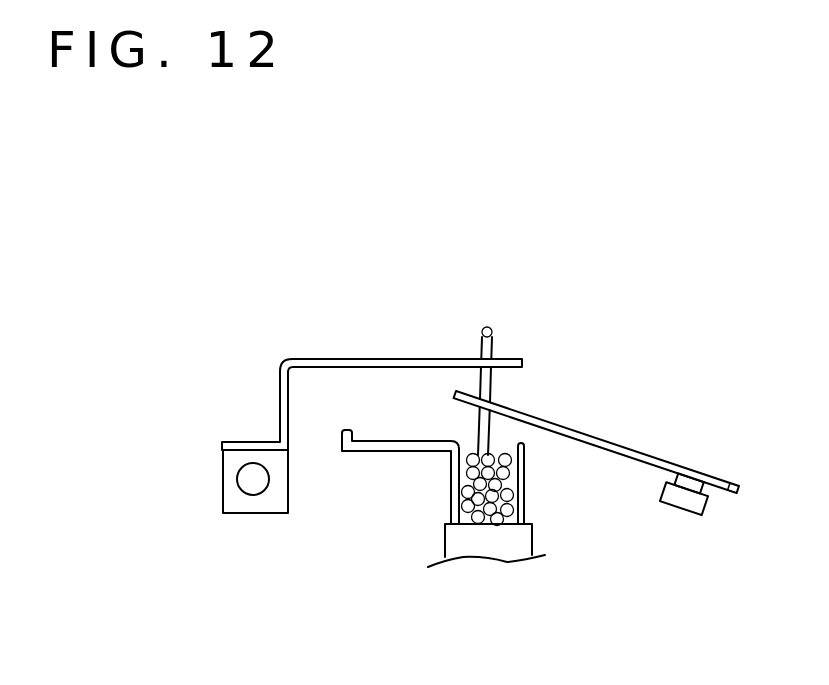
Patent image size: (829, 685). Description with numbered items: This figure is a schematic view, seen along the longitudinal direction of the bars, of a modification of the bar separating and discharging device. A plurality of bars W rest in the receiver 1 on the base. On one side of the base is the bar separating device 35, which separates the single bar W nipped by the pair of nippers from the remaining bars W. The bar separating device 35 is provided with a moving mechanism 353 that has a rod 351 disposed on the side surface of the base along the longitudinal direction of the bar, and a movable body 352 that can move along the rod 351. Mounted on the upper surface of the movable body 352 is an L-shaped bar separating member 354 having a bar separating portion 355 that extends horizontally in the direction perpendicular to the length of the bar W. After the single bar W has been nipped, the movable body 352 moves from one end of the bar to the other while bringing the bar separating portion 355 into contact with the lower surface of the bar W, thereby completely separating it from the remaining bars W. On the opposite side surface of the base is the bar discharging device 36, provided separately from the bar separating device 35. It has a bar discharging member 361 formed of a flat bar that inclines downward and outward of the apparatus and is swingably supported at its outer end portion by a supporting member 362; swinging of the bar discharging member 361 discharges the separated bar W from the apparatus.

The receiver 1 is at (440, 482).
The bar separating device 35 is at (337, 460).
The rod 351 is at (253, 487).
The movable body 352 is at (225, 499).
The moving mechanism 353 is at (237, 547).
The L-shaped bar separating member 354 is at (280, 403).
The bar separating portion 355 is at (386, 358).
The bar discharging device 36 is at (621, 459).
The bar discharging member 361 is at (572, 428).
The supporting member 362 is at (705, 510).
The bar W is at (492, 330).